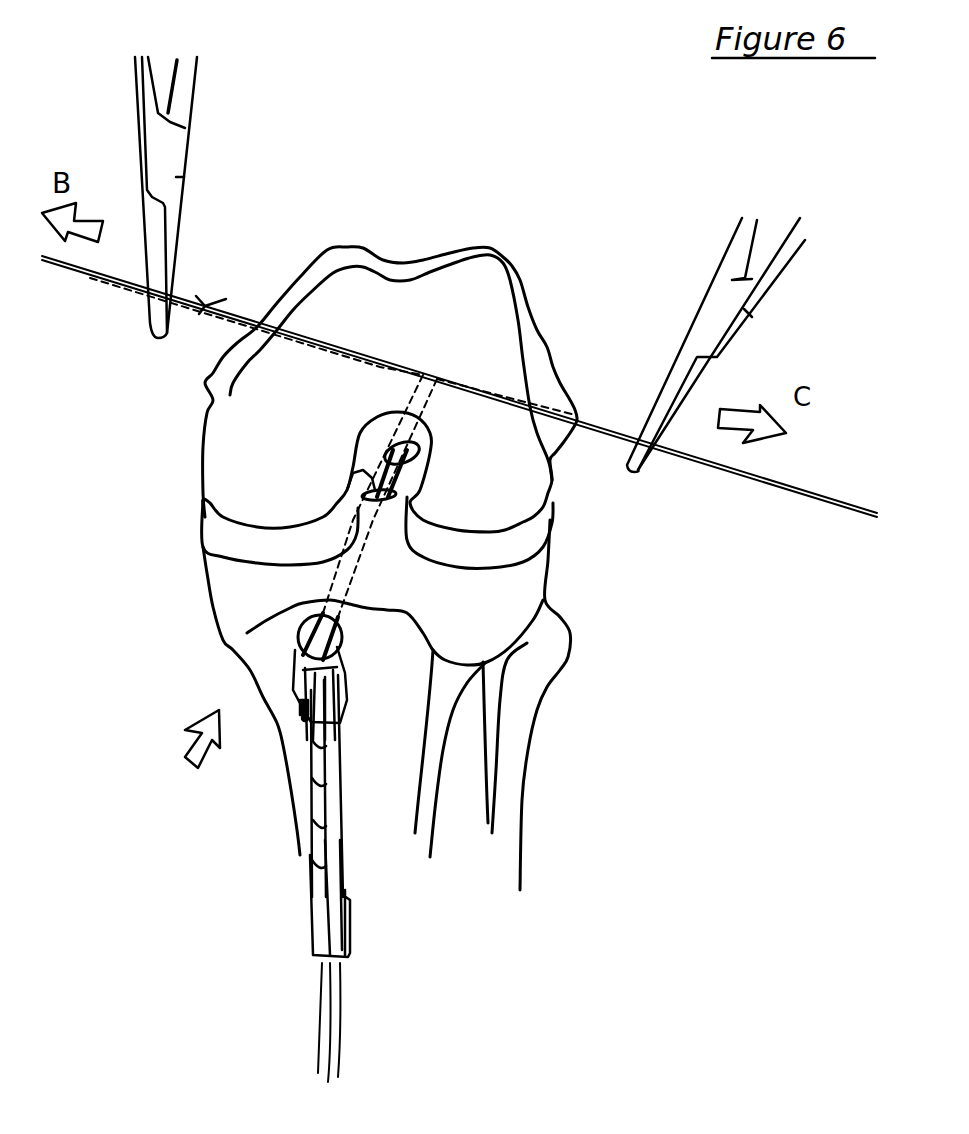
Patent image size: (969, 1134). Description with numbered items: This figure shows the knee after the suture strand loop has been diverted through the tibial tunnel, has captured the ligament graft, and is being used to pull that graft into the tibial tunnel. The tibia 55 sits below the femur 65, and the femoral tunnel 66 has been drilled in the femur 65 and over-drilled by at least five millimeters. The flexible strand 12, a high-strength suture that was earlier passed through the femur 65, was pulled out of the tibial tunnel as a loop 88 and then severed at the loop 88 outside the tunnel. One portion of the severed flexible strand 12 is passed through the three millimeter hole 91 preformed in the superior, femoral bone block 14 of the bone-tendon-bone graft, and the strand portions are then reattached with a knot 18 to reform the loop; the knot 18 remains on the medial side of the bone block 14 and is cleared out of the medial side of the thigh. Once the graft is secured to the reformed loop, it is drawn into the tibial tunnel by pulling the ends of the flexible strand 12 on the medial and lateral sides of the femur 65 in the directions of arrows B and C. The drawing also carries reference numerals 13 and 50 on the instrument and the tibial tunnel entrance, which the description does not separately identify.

The flexible strand 12 is at (743, 473).
The clamp 13 is at (738, 310).
The femoral bone block 14 is at (340, 737).
The knot 18 is at (200, 322).
The tibial tunnel opening 50 is at (337, 637).
The tibia 55 is at (517, 591).
The femur 65 is at (530, 481).
The femoral tunnel 66 is at (420, 447).
The loop 88 is at (350, 693).
The hole 91 is at (305, 720).